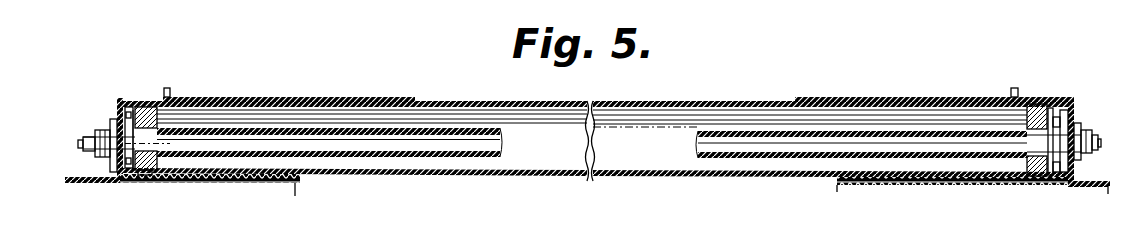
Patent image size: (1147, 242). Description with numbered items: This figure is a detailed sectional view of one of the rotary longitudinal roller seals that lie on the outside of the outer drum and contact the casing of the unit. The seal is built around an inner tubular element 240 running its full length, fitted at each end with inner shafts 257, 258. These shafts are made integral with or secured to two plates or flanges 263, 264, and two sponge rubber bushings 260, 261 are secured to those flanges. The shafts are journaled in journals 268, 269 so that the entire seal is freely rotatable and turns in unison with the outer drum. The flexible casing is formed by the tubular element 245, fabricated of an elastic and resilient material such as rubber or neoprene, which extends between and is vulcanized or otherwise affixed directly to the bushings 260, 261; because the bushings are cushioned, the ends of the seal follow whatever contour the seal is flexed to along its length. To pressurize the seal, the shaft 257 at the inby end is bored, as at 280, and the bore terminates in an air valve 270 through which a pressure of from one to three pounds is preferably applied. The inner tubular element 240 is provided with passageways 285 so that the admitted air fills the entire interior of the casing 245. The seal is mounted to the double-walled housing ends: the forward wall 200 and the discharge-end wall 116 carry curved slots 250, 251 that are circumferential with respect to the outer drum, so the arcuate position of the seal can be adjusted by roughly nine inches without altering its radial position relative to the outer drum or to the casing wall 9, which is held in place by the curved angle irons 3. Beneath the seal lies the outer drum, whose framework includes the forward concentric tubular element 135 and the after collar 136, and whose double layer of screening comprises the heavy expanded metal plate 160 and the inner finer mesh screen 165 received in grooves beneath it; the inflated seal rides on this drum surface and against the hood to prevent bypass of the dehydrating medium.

The curved angle irons 3 is at (167, 88).
The upper curved portion of the housing 9 is at (298, 98).
The wall 116 is at (1074, 113).
The concentric tubular element 135 is at (92, 183).
The tubular element or collar 136 is at (1078, 187).
The expanded metal or punched plate 160 is at (297, 183).
The inner finer mesh screen 165 is at (233, 183).
The wall 200 is at (125, 110).
The tubular element 240 is at (754, 158).
The tubular elements 245 is at (484, 101).
The curved slot 250 is at (104, 150).
The curved slot 251 is at (1094, 151).
The inner shaft 257 is at (160, 127).
The inner shaft 258 is at (1029, 145).
The sponge rubber bushing 260 is at (152, 183).
The sponge rubber bushing 261 is at (1036, 104).
The plate or flange 263 is at (126, 98).
The plate or flange 264 is at (1070, 100).
The journal 268 is at (110, 128).
The journal 269 is at (1092, 136).
The air valve 270 is at (84, 143).
The bore 280 is at (161, 144).
The passageways 285 is at (990, 157).